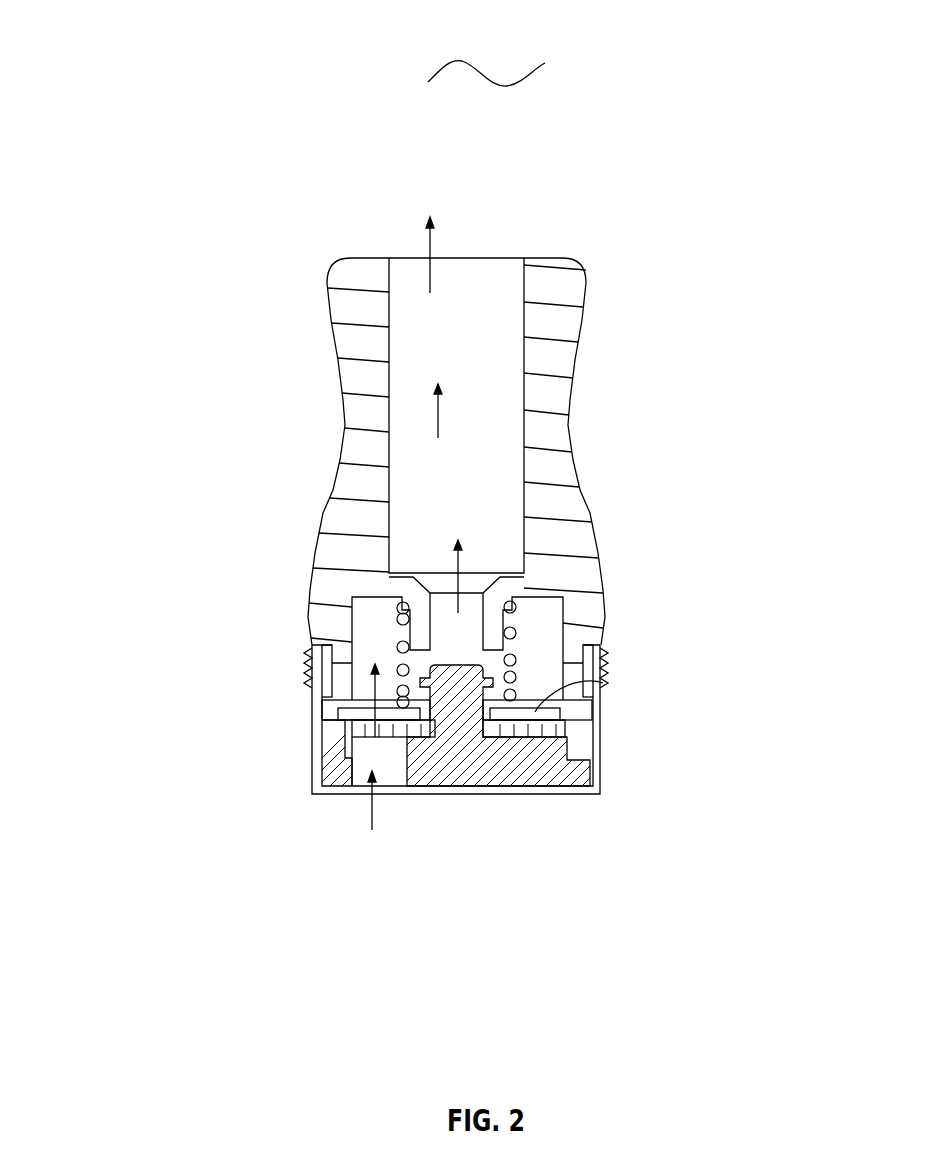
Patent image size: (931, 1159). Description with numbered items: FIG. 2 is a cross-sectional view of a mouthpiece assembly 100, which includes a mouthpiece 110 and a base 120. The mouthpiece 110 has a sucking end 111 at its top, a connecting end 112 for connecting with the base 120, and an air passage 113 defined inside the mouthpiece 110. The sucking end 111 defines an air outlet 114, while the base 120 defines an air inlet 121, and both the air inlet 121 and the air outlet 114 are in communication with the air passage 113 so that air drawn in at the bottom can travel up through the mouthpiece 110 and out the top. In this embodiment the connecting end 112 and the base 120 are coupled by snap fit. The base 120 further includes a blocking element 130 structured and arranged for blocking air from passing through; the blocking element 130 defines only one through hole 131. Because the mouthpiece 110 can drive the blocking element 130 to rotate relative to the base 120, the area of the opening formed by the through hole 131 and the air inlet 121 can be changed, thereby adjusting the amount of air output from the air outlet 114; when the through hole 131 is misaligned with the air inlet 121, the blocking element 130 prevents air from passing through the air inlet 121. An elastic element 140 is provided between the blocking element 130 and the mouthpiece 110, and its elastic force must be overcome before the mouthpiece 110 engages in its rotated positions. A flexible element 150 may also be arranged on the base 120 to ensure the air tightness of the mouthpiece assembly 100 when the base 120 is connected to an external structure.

The mouthpiece assembly 100 is at (486, 47).
The mouthpiece 110 is at (337, 472).
The sucking end 111 is at (590, 291).
The connecting end 112 is at (343, 668).
The air passage 113 is at (462, 500).
The air outlet 114 is at (453, 305).
The base 120 is at (320, 730).
The air inlet 121 is at (382, 728).
The blocking element 130 is at (607, 682).
The through hole 131 is at (325, 688).
The elastic element 140 is at (513, 668).
The flexible element 150 is at (497, 768).